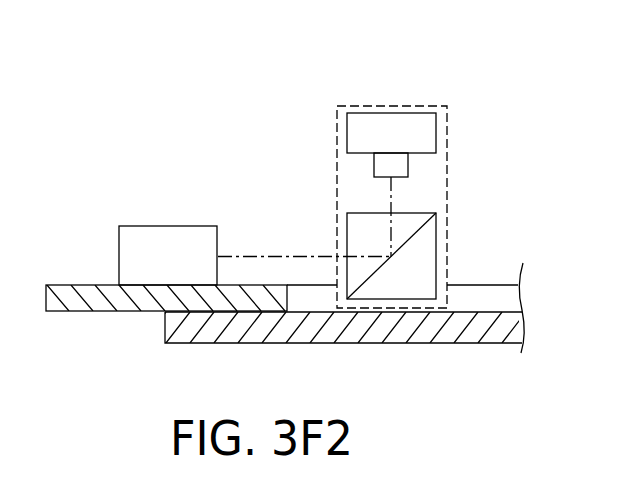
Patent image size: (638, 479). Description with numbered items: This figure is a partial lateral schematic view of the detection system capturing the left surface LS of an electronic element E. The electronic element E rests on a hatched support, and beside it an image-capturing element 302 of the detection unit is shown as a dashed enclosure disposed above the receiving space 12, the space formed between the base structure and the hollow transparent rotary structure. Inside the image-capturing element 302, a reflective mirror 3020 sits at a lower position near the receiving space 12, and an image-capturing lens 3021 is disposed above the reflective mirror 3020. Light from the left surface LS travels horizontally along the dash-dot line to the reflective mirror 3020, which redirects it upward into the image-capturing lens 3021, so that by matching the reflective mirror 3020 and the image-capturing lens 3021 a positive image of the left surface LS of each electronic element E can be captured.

The receiving space 12 is at (505, 305).
The electronic element E is at (123, 227).
The left surface LS is at (218, 247).
The image-capturing element 302 is at (430, 105).
The image-capturing lens 3021 is at (432, 138).
The reflective mirror 3020 is at (432, 245).